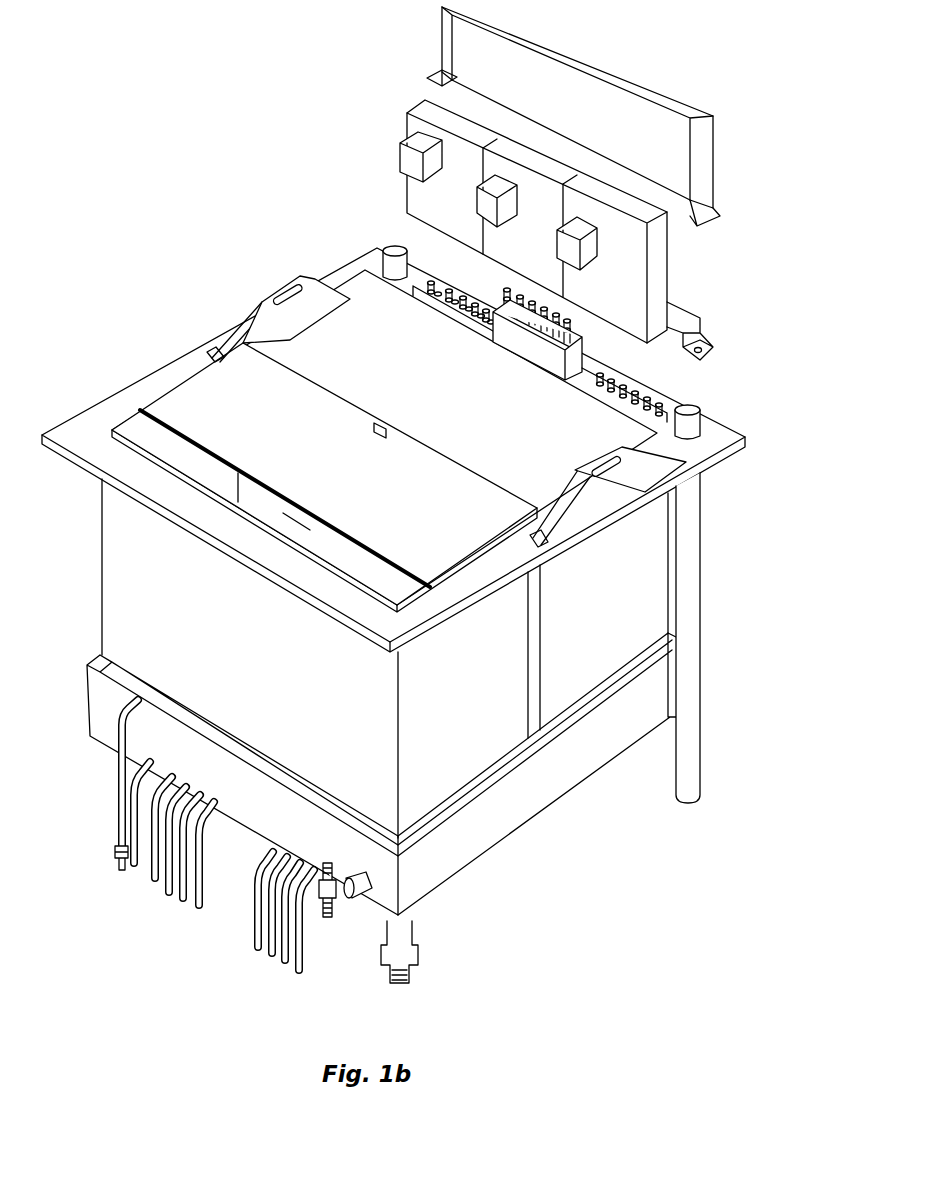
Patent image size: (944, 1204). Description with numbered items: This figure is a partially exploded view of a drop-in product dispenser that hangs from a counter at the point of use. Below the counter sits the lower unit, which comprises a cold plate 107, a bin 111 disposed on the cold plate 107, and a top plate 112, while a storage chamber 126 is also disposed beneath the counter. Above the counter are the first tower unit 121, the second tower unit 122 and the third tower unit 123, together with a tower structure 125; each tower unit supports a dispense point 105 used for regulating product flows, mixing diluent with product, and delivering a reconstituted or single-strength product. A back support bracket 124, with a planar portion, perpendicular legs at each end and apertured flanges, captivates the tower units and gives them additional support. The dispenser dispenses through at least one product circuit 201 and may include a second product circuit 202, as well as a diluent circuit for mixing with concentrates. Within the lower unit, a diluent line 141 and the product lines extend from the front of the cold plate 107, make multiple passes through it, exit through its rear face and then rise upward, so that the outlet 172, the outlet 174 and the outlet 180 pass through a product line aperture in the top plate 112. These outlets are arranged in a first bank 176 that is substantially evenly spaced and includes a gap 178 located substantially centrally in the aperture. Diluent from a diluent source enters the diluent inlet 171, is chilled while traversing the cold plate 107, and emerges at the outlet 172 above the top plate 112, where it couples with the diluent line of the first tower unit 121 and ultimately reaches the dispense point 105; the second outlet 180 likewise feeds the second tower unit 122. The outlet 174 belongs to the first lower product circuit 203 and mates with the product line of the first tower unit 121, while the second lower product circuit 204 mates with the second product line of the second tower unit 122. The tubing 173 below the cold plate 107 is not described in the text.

The dispense point 105 is at (398, 162).
The cold plate 107 is at (573, 790).
The bin 111 is at (618, 616).
The top plate 112 is at (720, 437).
The first tower unit 121 is at (460, 216).
The second tower unit 122 is at (625, 299).
The third tower unit 123 is at (539, 252).
The back support bracket 124 is at (680, 308).
The tower structure 125 is at (614, 76).
The storage chamber 126 is at (176, 452).
The diluent line 141 is at (115, 748).
The diluent inlet 171 is at (118, 868).
The first outlet of the diluent circuit 172 is at (420, 290).
The tubing 173 is at (305, 958).
The outlet of the first lower product circuit 174 is at (445, 308).
The first bank 176 is at (572, 384).
The gap 178 is at (592, 345).
The second outlet of the diluent circuit 180 is at (602, 392).
The product circuit 201 is at (658, 815).
The second product circuit 202 is at (633, 845).
The first lower product circuit 203 is at (607, 872).
The second lower product circuit 204 is at (580, 900).